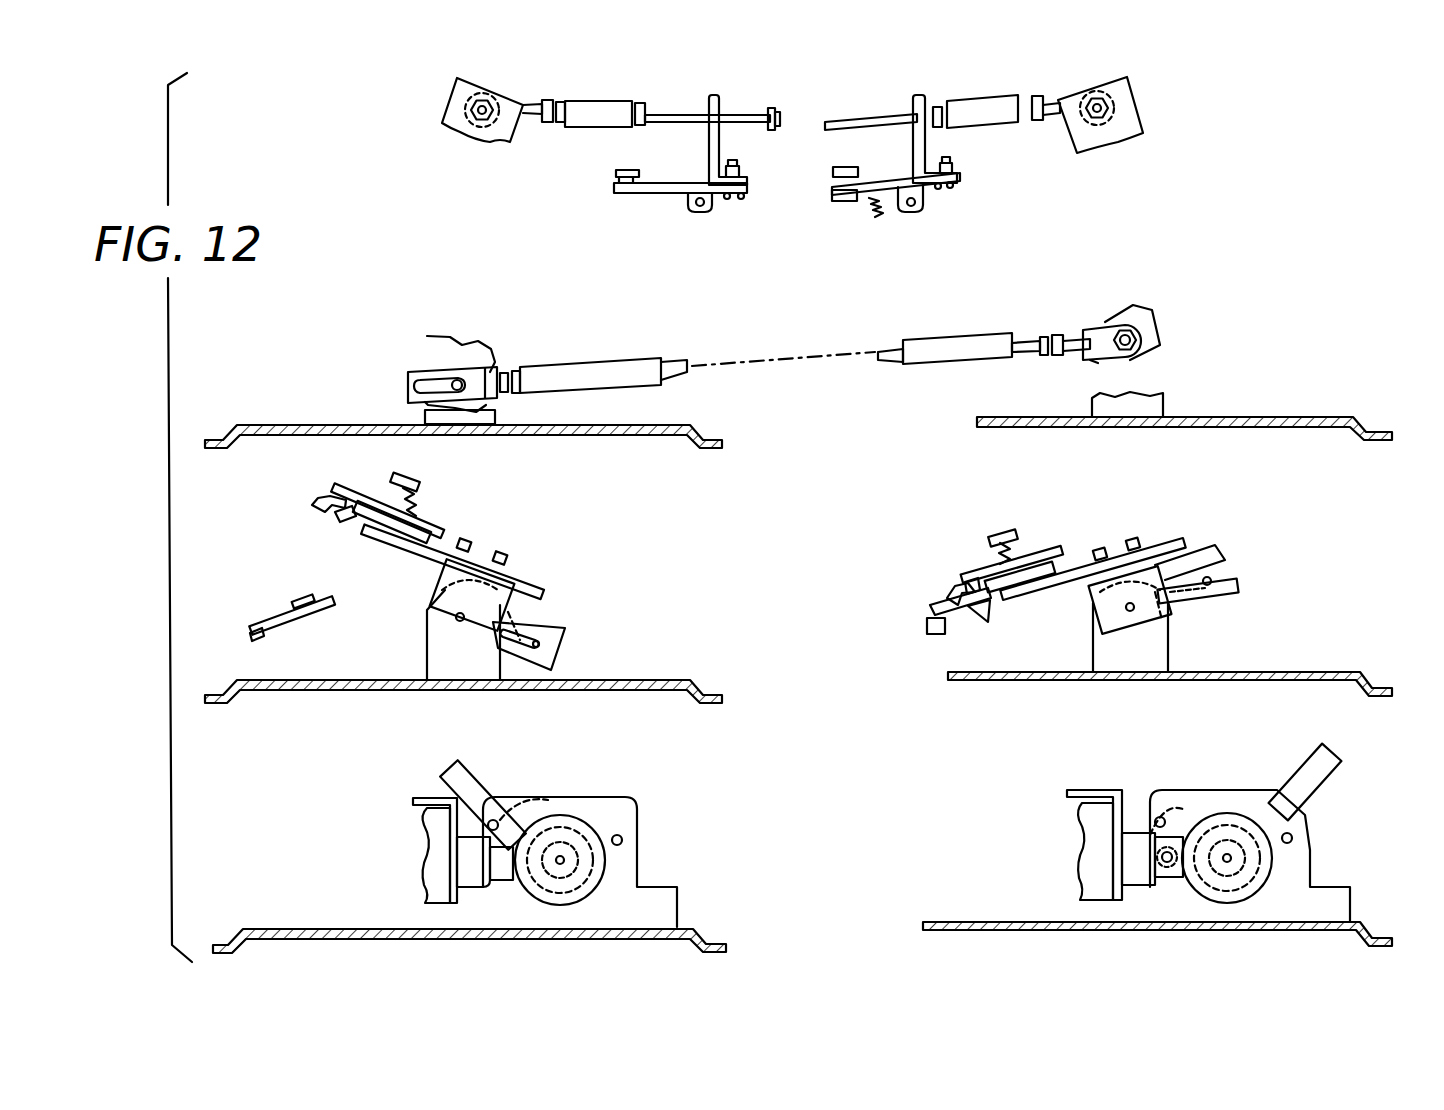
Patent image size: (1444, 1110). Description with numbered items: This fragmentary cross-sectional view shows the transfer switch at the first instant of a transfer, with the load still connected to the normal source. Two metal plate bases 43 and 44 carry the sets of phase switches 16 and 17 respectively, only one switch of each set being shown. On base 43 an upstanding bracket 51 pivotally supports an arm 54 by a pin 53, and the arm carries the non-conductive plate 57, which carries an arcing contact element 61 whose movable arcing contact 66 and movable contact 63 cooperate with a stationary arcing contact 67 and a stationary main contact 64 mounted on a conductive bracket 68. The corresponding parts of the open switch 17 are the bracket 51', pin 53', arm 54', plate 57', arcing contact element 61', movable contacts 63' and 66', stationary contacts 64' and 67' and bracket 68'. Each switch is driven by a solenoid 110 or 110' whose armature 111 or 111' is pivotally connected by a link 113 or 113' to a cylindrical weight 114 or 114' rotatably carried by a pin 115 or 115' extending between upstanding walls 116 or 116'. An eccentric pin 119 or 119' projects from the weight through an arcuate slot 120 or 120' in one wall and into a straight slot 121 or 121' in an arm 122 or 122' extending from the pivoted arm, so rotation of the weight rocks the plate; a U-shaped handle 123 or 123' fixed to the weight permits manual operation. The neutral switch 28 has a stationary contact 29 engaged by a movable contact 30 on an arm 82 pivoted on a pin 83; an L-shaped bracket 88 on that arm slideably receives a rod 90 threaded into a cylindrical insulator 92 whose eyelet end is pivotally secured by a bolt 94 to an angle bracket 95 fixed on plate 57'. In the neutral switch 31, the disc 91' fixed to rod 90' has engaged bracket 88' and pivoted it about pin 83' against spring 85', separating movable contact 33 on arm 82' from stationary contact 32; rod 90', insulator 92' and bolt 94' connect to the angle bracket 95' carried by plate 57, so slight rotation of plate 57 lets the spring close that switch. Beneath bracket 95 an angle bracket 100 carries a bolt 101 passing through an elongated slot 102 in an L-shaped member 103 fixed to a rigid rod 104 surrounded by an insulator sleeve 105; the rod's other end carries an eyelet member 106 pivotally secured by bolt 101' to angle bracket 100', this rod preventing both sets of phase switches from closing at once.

The bolt 94 is at (486, 82).
The angle bracket 95 is at (450, 125).
The cylindrical insulator 92 is at (605, 89).
The rod 90 is at (712, 95).
The L-shaped bracket 88 is at (744, 116).
The neutral switch 28 is at (598, 164).
The stationary contact 29 is at (618, 176).
The movable contact 30 is at (622, 183).
The arm 82 is at (680, 210).
The pin 83 is at (706, 223).
The rod 90' is at (871, 102).
The L-shaped bracket 88' is at (922, 115).
The disc 91' is at (961, 91).
The cylindrical insulator 92' is at (995, 93).
The bolt 94' is at (1096, 88).
The angle bracket 95' is at (1132, 115).
The neutral switch 31 is at (860, 165).
The stationary contact 32 is at (840, 172).
The movable contact 33 is at (832, 192).
The arm 82' is at (896, 178).
The pin 83' is at (937, 213).
The compression spring 85' is at (866, 227).
The angle bracket 100 is at (470, 355).
The bolt 101 is at (418, 350).
The elongated slot 102 is at (423, 386).
The L-shaped member 103 is at (410, 378).
The metal plate base 44 is at (275, 425).
The rigid rod 104 is at (1027, 342).
The insulator sleeve 105 is at (947, 350).
The eyelet member 106 is at (1090, 336).
The angle bracket 100' is at (1168, 352).
The bolt 101' is at (1176, 353).
The metal plate base 43 is at (1294, 417).
The phase switches 17 is at (303, 490).
The movable arcing contact 66' is at (288, 513).
The movable contact 63' is at (325, 525).
The arcing contact element 61' is at (414, 508).
The non-conductive plate 57' is at (479, 561).
The straight slot 121' is at (562, 608).
The pin 119' is at (523, 769).
The arm 54' is at (447, 595).
The stationary arcing contact 67' is at (281, 590).
The stationary main contact 64' is at (310, 596).
The conductive bracket 68' is at (283, 648).
The upstanding bracket 51' is at (434, 635).
The pin 53' is at (459, 665).
The arm 122' is at (535, 663).
The phase switches 16 is at (947, 563).
The movable contact 63 is at (978, 545).
The arcing contact element 61 is at (1025, 545).
The non-conductive plate 57 is at (1095, 548).
The second pin 119 is at (1211, 669).
The movable arcing contact 66 is at (919, 592).
The stationary arcing contact 67 is at (930, 614).
The conductive bracket 68 is at (939, 647).
The stationary main contact 64 is at (993, 624).
The arm 54 is at (1106, 600).
The upstanding bracket 51 is at (1098, 637).
The pin 53 is at (1130, 635).
The straight slot 121 is at (1209, 605).
The arm 122 is at (1198, 626).
The U-shaped handle 123' is at (451, 794).
The link 113' is at (514, 786).
The upstanding walls 116' is at (580, 834).
The cylindrical weight 114' is at (612, 845).
The pin 115' is at (623, 854).
The arcuate slot 120' is at (627, 864).
The solenoid 110' is at (404, 850).
The armature 111' is at (437, 902).
The link 113 is at (1154, 784).
The upstanding walls 116 is at (1250, 823).
The U-shaped handle 123 is at (1346, 774).
The pin 115 is at (1281, 858).
The cylindrical weight 114 is at (1261, 867).
The electrical solenoid 110 is at (1059, 845).
The armature 111 is at (1113, 894).
The arcuate slot 120 is at (1220, 901).